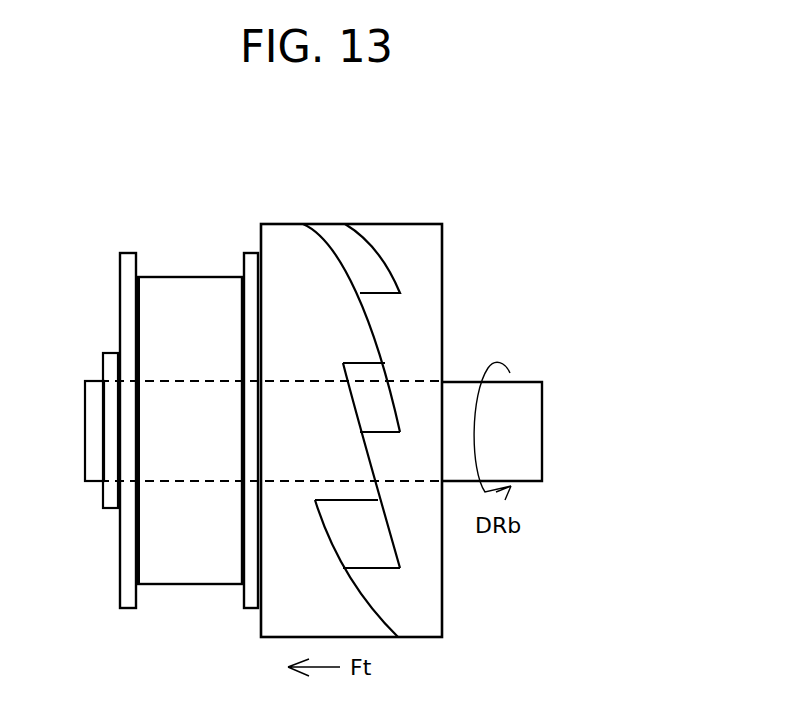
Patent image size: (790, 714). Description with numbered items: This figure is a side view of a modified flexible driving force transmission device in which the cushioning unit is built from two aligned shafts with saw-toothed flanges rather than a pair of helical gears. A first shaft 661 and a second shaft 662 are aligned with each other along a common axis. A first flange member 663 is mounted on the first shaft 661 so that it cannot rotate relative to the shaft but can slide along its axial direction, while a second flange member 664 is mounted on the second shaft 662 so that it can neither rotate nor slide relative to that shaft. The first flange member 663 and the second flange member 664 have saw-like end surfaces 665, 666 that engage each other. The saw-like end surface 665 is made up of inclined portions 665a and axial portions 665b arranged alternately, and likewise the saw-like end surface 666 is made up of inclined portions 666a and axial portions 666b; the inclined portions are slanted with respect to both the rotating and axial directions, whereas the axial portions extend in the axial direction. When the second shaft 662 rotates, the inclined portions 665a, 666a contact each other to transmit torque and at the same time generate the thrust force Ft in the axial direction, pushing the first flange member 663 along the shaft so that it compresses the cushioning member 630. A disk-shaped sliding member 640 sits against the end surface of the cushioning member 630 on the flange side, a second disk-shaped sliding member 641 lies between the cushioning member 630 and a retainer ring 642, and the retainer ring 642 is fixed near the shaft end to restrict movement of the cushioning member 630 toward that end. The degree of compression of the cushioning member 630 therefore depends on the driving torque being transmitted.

The cushioning member 630 is at (193, 275).
The sliding member 640 is at (253, 252).
The sliding member 641 is at (132, 252).
The retainer ring 642 is at (110, 353).
The first shaft 661 is at (187, 452).
The second shaft 662 is at (530, 435).
The first flange member 663 is at (292, 237).
The second flange member 664 is at (397, 237).
The saw-like end surface 665 is at (494, 569).
The inclined portions 665a is at (332, 545).
The axial portions 665b is at (348, 500).
The saw-like end surface 666 is at (508, 407).
The inclined portions 666a is at (385, 365).
The axial portions 666b is at (378, 432).